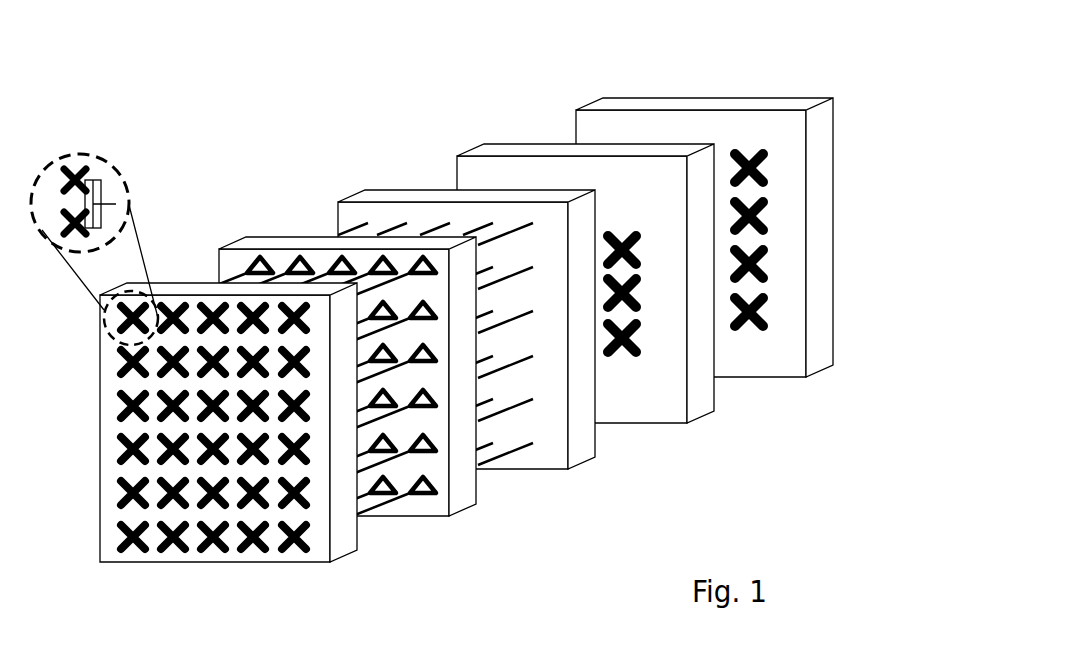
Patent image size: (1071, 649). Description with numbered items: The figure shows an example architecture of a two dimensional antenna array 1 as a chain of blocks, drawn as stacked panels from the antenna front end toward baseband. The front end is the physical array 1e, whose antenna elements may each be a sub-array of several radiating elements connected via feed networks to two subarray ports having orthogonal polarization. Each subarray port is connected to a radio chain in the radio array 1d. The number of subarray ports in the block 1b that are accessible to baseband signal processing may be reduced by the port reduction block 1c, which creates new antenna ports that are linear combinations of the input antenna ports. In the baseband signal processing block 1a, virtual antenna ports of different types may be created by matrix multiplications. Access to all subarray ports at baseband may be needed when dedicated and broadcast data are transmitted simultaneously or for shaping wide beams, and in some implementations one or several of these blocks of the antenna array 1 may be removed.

The two dimensional antenna array 1 is at (146, 58).
The baseband signal processing block 1a is at (697, 109).
The block of subarray ports accessible to baseband 1b is at (505, 158).
The port reduction block 1c is at (398, 200).
The radio array 1d is at (303, 247).
The physical array 1e is at (212, 295).